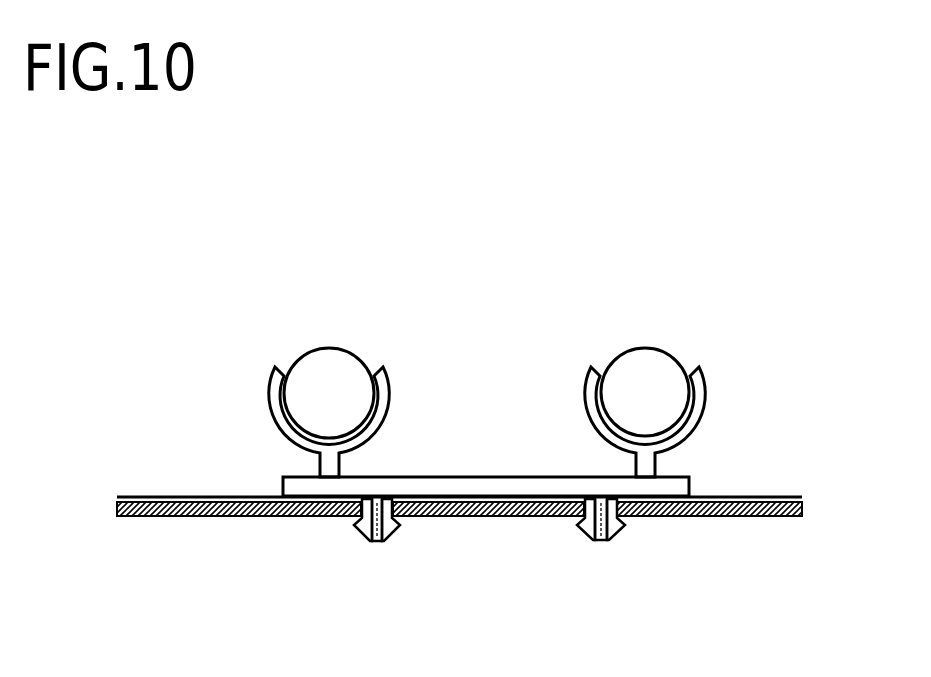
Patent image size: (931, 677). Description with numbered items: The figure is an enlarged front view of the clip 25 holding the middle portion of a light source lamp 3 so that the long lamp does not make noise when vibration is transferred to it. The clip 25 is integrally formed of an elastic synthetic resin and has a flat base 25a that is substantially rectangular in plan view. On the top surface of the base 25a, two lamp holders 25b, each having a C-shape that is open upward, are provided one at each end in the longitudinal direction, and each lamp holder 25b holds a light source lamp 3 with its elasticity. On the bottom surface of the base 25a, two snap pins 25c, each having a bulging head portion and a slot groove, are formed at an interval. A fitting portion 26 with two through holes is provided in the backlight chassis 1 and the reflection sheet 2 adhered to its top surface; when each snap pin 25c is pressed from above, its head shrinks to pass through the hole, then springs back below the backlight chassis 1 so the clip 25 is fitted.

The backlight chassis 1 is at (193, 519).
The reflection sheet 2 is at (148, 496).
The light source lamp 3 is at (643, 348).
The clip 25 is at (505, 482).
The base 25a is at (490, 477).
The lamp holder 25b is at (707, 395).
The snap pin 25c is at (593, 537).
The fitting portion 26 is at (647, 517).